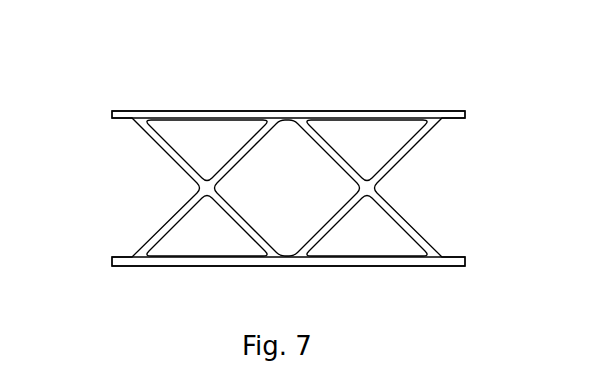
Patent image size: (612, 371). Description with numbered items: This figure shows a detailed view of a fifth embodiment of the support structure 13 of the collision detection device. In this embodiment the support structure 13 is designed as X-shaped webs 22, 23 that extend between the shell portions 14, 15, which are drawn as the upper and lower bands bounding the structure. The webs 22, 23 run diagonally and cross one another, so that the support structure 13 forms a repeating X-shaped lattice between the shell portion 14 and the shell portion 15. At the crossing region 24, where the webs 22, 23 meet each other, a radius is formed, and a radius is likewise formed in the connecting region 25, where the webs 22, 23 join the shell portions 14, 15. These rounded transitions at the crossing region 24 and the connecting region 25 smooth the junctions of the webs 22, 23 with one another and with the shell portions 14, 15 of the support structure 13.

The support structure 13 is at (424, 187).
The shell portion 14 is at (180, 114).
The shell portion 15 is at (214, 263).
The web 22 is at (161, 237).
The web 23 is at (163, 151).
The crossing region 24 is at (197, 189).
The connecting region 25 is at (443, 243).